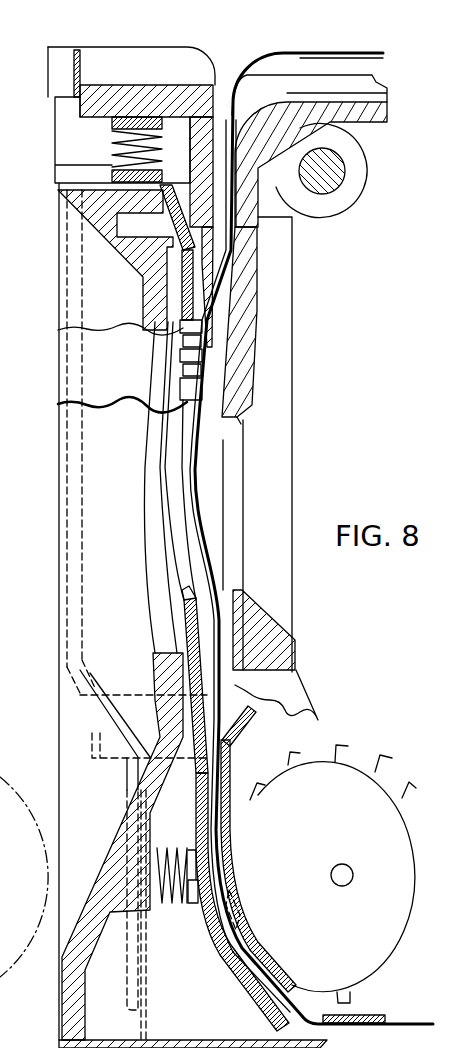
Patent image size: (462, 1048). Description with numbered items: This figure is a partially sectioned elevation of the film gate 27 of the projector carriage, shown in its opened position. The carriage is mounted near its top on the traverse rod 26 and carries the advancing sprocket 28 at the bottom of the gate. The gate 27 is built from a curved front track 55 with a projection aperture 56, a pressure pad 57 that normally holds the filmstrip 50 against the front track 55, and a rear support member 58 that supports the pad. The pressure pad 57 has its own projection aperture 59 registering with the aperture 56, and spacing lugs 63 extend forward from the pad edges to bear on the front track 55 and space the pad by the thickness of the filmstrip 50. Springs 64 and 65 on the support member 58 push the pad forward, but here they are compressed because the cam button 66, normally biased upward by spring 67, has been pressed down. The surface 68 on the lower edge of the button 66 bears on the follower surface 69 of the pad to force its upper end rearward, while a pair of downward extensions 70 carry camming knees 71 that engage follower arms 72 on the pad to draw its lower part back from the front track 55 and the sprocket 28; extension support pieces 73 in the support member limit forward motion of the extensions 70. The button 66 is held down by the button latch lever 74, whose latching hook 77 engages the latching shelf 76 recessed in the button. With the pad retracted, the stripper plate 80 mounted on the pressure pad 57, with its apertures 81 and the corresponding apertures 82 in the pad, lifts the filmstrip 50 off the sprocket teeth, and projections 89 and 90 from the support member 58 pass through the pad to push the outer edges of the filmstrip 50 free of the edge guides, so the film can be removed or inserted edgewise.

The traverse rod 26 is at (354, 188).
The film gate 27 is at (274, 342).
The advancing sprocket 28 is at (364, 766).
The filmstrip 50 is at (336, 53).
The front track 55 is at (275, 629).
The projection aperture 56 is at (244, 430).
The pressure pad 57 is at (192, 628).
The support member 58 is at (117, 844).
The projection aperture 59 is at (188, 416).
The spacing lugs 63 is at (209, 426).
The spring 64 is at (177, 906).
The spring 65 is at (174, 296).
The cam button 66 is at (178, 92).
The spring 67 is at (112, 146).
The surface 68 is at (202, 236).
The follower surface 69 is at (198, 256).
The downward extensions 70 is at (84, 526).
The camming knees 71 is at (78, 690).
The follower arms 72 is at (90, 722).
The extension support pieces 73 is at (148, 1018).
The button latch lever 74 is at (56, 146).
The latching shelf 76 is at (102, 106).
The latching hook 77 is at (86, 100).
The stripper plate 80 is at (228, 849).
The apertures 81 is at (234, 926).
The apertures 82 is at (232, 974).
The projection 89 is at (205, 370).
The projection 90 is at (234, 747).